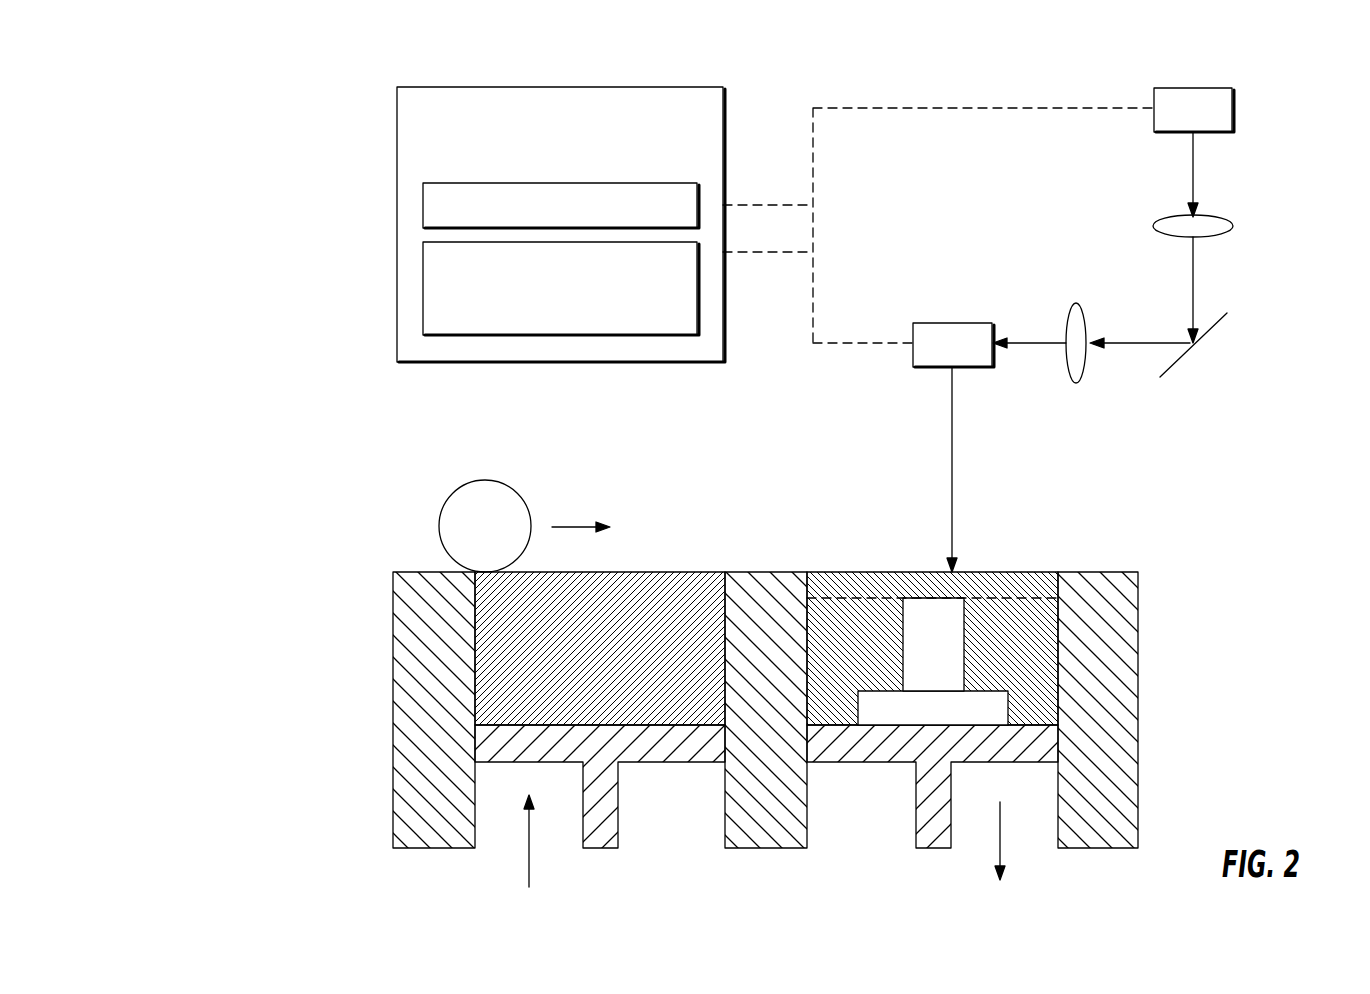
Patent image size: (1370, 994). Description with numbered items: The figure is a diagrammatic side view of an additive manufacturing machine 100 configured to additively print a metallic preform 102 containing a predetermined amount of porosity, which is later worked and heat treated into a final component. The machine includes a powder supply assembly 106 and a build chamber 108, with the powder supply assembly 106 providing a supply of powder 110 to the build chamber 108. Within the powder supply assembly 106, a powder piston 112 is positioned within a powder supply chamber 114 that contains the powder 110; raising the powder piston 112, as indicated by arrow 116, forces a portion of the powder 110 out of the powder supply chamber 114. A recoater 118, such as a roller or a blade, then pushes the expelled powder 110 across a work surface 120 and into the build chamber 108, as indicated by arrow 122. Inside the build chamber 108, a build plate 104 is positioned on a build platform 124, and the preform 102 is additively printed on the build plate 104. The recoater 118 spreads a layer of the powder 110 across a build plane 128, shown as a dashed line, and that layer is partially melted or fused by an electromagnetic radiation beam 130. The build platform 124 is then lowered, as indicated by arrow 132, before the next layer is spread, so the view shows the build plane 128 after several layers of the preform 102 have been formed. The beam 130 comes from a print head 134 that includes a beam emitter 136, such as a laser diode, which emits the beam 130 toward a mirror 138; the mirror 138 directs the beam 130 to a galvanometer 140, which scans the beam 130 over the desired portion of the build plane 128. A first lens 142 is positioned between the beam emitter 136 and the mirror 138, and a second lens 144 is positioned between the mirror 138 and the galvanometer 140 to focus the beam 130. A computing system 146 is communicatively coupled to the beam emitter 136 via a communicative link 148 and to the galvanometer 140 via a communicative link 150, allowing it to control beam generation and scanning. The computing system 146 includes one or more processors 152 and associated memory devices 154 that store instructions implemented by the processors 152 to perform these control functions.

The additive manufacturing machine 100 is at (268, 102).
The metallic preform 102 is at (927, 670).
The build plate 104 is at (883, 713).
The powder supply assembly 106 is at (350, 760).
The build chamber 108 is at (859, 615).
The powder 110 is at (618, 668).
The powder piston 112 is at (602, 848).
The powder supply chamber 114 is at (675, 598).
The arrow 116 is at (528, 848).
The recoater 118 is at (442, 510).
The work surface 120 is at (763, 572).
The arrow 122 is at (580, 525).
The build platform 124 is at (932, 848).
The build plane 128 is at (1015, 598).
The electromagnetic radiation beam 130 is at (1193, 180).
The arrow 132 is at (1000, 843).
The print head 134 is at (1205, 428).
The beam emitter 136 is at (1232, 112).
The mirror 138 is at (1185, 353).
The galvanometer 140 is at (927, 367).
The first lens 142 is at (1233, 226).
The second lens 144 is at (1077, 303).
The computing system 146 is at (455, 87).
The communicative link 148 is at (913, 108).
The communicative link 150 is at (813, 275).
The processor 152 is at (423, 205).
The memory device 154 is at (423, 300).